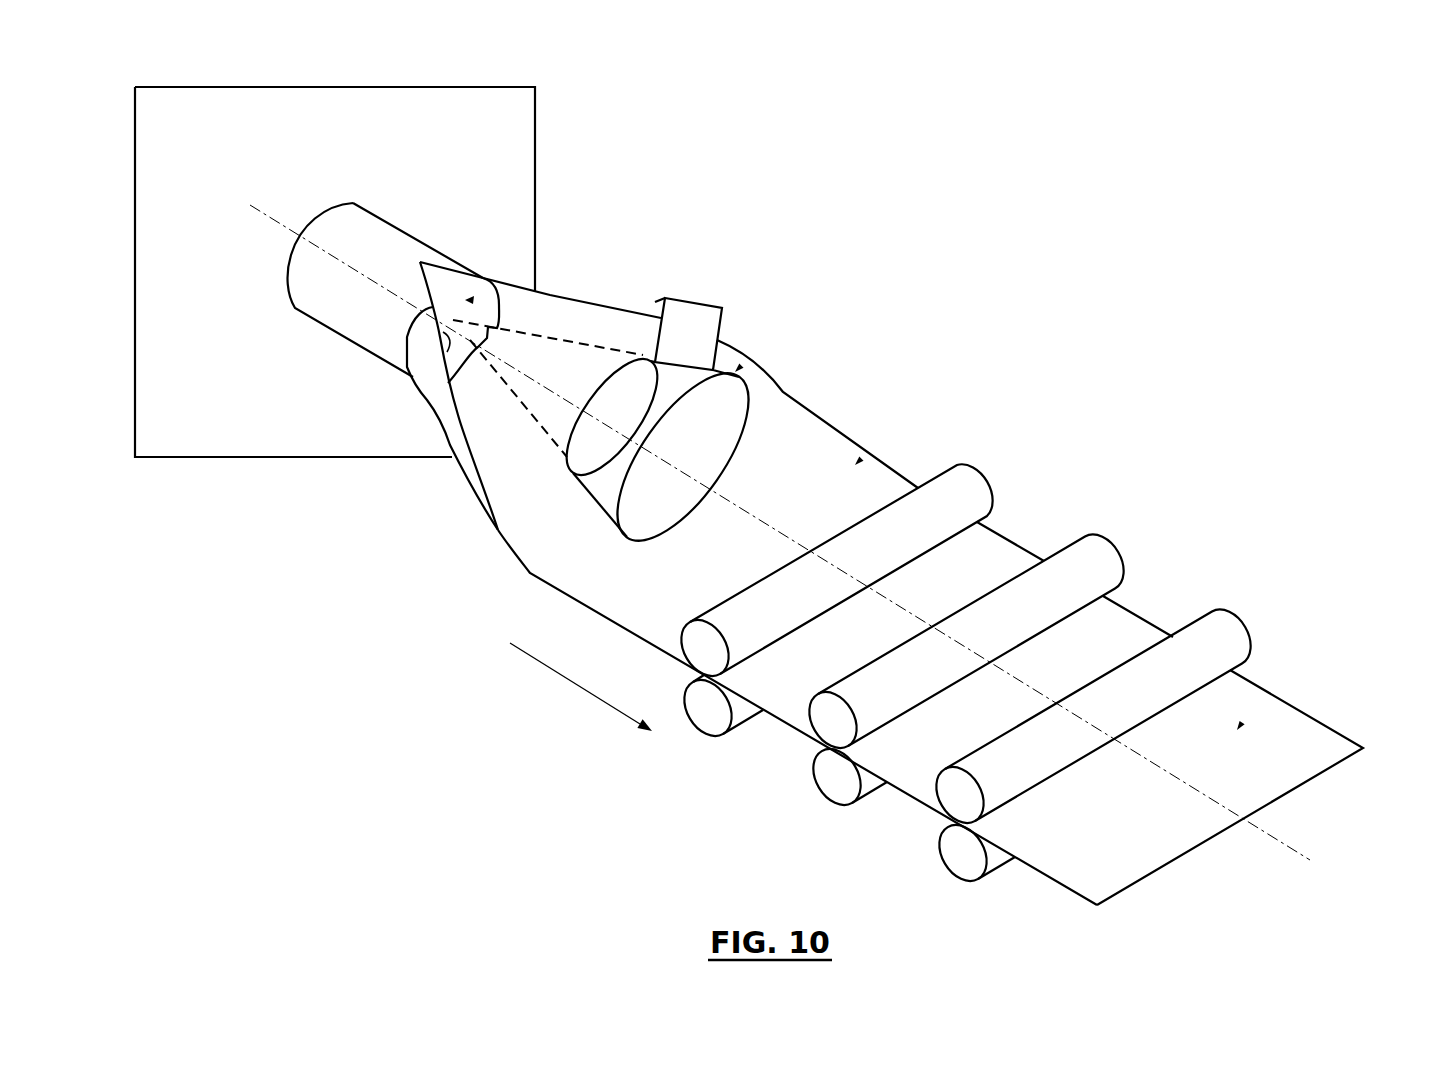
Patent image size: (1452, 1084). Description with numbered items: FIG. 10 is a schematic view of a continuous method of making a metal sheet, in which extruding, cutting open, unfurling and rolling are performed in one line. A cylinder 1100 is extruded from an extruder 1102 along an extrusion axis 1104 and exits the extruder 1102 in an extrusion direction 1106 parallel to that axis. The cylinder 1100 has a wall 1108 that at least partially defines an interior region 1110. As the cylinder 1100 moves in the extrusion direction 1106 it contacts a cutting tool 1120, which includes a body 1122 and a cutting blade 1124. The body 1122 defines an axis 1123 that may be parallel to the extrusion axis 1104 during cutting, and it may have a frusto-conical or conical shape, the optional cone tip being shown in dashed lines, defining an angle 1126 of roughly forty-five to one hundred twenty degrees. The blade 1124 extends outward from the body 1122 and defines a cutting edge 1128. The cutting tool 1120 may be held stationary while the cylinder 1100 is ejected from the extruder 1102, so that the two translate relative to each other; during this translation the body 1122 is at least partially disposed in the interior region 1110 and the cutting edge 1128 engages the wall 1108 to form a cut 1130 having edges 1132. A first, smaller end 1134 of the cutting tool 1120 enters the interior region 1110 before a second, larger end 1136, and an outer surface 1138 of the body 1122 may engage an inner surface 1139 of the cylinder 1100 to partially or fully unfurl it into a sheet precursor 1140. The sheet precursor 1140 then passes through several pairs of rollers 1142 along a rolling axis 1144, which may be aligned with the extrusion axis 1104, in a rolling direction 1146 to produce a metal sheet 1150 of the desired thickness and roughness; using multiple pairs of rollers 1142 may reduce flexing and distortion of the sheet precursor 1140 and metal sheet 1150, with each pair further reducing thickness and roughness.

The cylinder 1100 is at (387, 236).
The extruder 1102 is at (492, 110).
The extrusion axis 1104 is at (1204, 812).
The extrusion direction 1106 is at (780, 622).
The wall 1108 is at (463, 270).
The interior region 1110 is at (474, 300).
The cutting tool 1120 is at (739, 368).
The body 1122 is at (730, 412).
The axis 1123 is at (1230, 787).
The cutting blade 1124 is at (715, 312).
The angle 1126 is at (488, 334).
The cutting edge 1128 is at (657, 298).
The cut 1130 is at (420, 293).
The edges 1132 is at (510, 277).
The first end 1134 is at (558, 430).
The second end 1136 is at (667, 527).
The outer surface 1138 is at (612, 487).
The inner surface 1139 is at (445, 337).
The sheet precursor 1140 is at (859, 461).
The rollers 1142 is at (970, 478).
The rolling axis 1144 is at (1293, 853).
The rolling direction 1146 is at (550, 673).
The metal sheet 1150 is at (1242, 723).